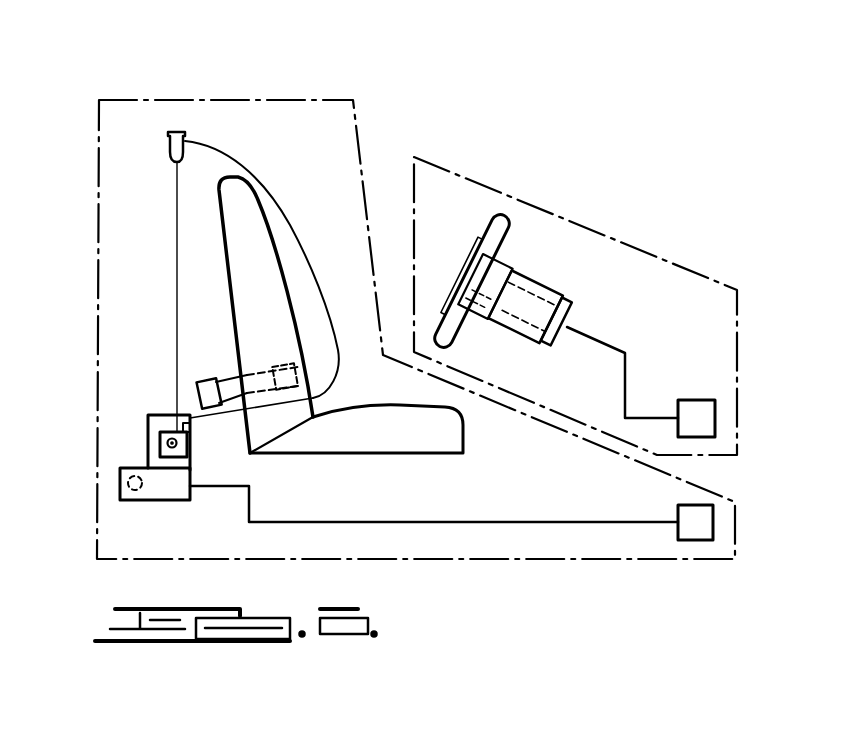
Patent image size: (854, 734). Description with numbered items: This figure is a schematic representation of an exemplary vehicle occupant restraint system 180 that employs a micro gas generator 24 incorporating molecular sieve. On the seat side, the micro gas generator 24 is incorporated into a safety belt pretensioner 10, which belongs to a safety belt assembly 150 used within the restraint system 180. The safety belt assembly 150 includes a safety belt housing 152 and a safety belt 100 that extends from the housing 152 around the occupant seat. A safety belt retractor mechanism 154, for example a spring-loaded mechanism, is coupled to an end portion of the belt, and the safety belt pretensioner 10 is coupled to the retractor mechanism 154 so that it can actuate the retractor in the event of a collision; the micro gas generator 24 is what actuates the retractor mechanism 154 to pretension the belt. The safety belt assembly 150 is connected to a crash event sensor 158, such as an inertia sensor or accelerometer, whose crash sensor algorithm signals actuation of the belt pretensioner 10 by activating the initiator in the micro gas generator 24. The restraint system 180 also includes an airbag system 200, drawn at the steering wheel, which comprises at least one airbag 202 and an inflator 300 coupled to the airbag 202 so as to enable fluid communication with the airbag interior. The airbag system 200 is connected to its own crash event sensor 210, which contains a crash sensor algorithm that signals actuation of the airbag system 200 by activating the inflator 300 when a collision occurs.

The safety belt pretensioner 10 is at (143, 500).
The micro gas generator 24 is at (119, 487).
The safety belt 100 is at (291, 196).
The safety belt assembly 150 is at (237, 103).
The safety belt housing 152 is at (185, 448).
The safety belt retractor mechanism 154 is at (148, 414).
The crash event sensor 158 is at (713, 521).
The vehicle occupant restraint system 180 is at (522, 129).
The airbag system 200 is at (626, 243).
The airbag 202 is at (503, 254).
The crash event sensor 210 is at (695, 402).
The inflator 300 is at (566, 295).